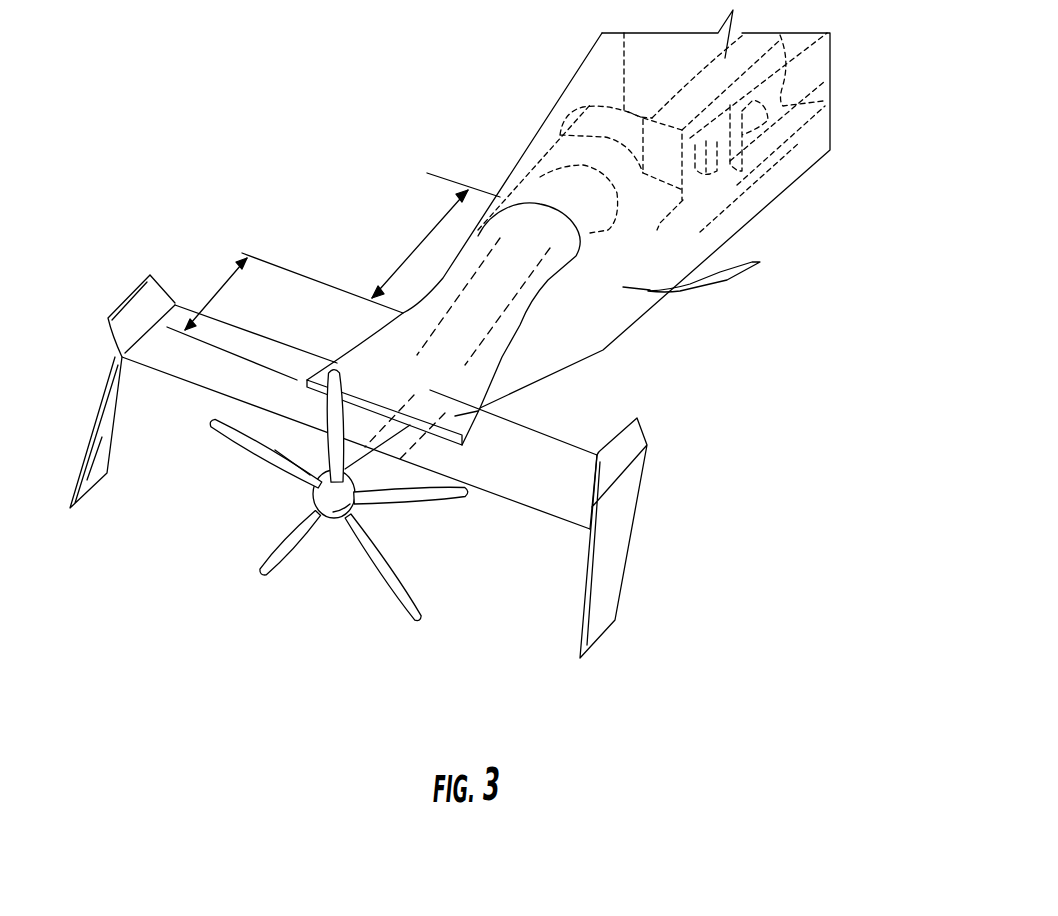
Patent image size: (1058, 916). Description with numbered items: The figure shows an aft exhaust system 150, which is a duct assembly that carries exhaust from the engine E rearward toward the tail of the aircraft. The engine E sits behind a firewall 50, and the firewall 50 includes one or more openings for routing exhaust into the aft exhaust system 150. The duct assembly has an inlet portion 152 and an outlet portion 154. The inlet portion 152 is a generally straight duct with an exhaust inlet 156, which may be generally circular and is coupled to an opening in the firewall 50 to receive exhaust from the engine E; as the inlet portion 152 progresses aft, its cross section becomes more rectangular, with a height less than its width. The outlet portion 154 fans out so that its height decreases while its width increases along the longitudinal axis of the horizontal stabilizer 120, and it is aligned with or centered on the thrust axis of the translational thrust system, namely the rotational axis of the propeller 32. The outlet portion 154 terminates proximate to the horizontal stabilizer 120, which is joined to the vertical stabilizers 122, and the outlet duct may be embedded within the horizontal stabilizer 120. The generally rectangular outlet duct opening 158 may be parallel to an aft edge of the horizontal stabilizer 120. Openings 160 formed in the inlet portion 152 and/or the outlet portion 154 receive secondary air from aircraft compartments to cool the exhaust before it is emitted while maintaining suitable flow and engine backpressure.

The propeller 32 is at (317, 520).
The firewall 50 is at (620, 290).
The horizontal stabilizer 120 is at (565, 505).
The vertical stabilizers 122 is at (612, 557).
The aft exhaust system 150 is at (517, 363).
The inlet portion 152 is at (410, 255).
The outlet portion 154 is at (213, 295).
The exhaust inlet 156 is at (540, 273).
The outlet duct opening 158 is at (450, 437).
The openings 160 is at (550, 267).
The engine E is at (563, 170).